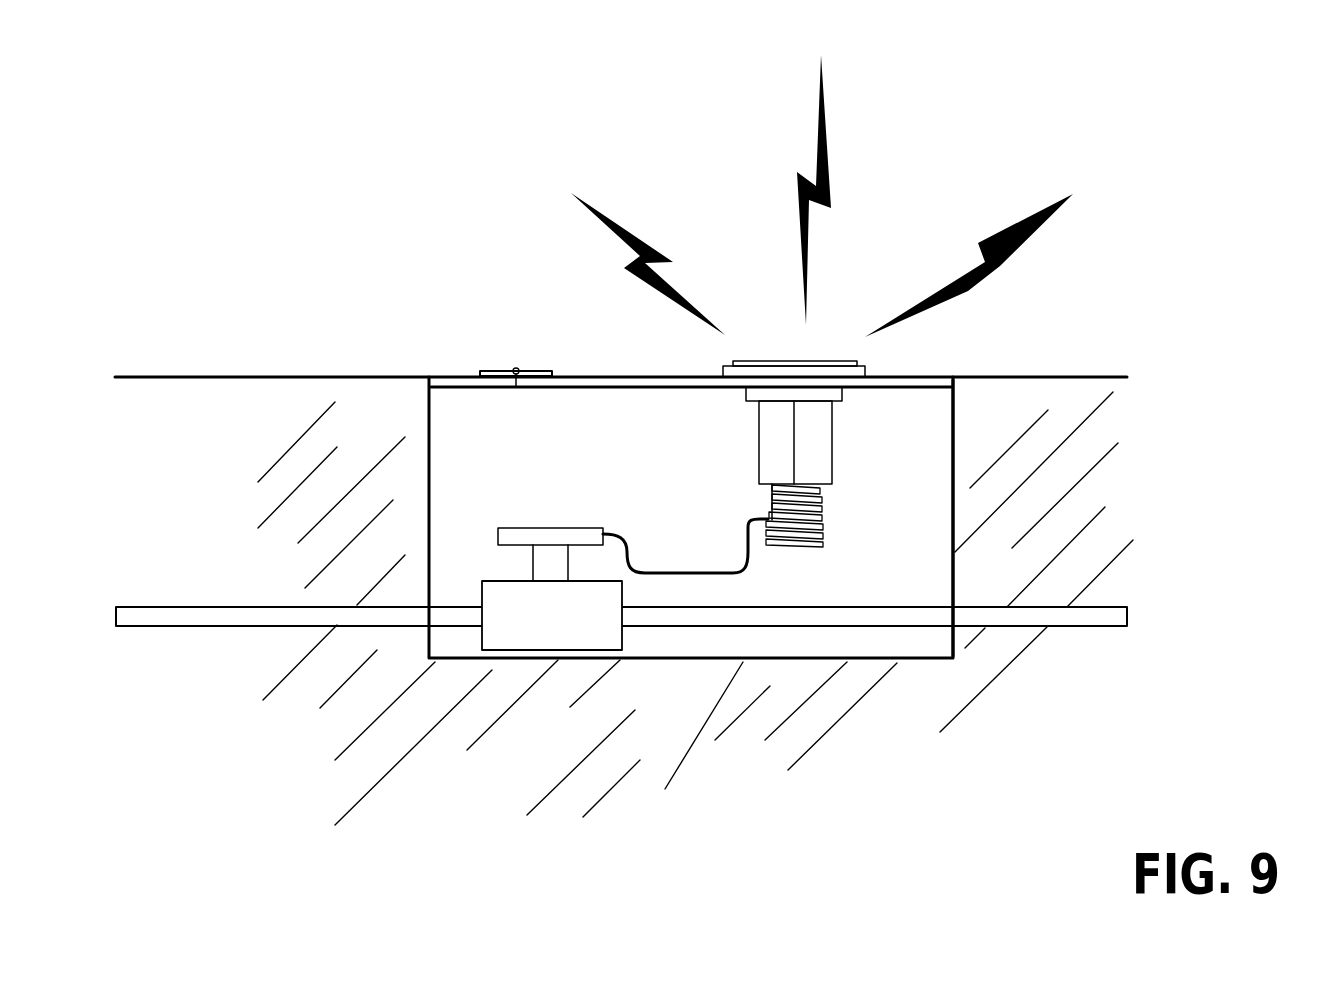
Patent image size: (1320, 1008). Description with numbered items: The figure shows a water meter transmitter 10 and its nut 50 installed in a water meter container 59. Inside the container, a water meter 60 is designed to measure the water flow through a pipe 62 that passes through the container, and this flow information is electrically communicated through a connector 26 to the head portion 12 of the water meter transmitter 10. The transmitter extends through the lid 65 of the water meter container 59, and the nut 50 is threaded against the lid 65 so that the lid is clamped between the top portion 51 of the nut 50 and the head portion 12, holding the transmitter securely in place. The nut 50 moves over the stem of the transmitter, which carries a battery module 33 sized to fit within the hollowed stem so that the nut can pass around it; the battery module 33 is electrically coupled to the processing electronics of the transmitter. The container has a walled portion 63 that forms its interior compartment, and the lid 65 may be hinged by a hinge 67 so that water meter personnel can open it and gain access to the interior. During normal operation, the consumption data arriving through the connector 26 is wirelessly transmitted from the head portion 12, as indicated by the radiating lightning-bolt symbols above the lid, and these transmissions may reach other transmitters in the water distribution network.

The water meter transmitter 10 is at (865, 372).
The head portion 12 is at (726, 374).
The connector 26 is at (749, 578).
The battery module 33 is at (772, 493).
The nut 50 is at (829, 446).
The top portion 51 is at (745, 398).
The water meter container 59 is at (691, 517).
The water meter 60 is at (552, 589).
The pipe 62 is at (226, 606).
The walled portion 63 is at (953, 470).
The lid 65 is at (613, 376).
The hinge 67 is at (491, 371).